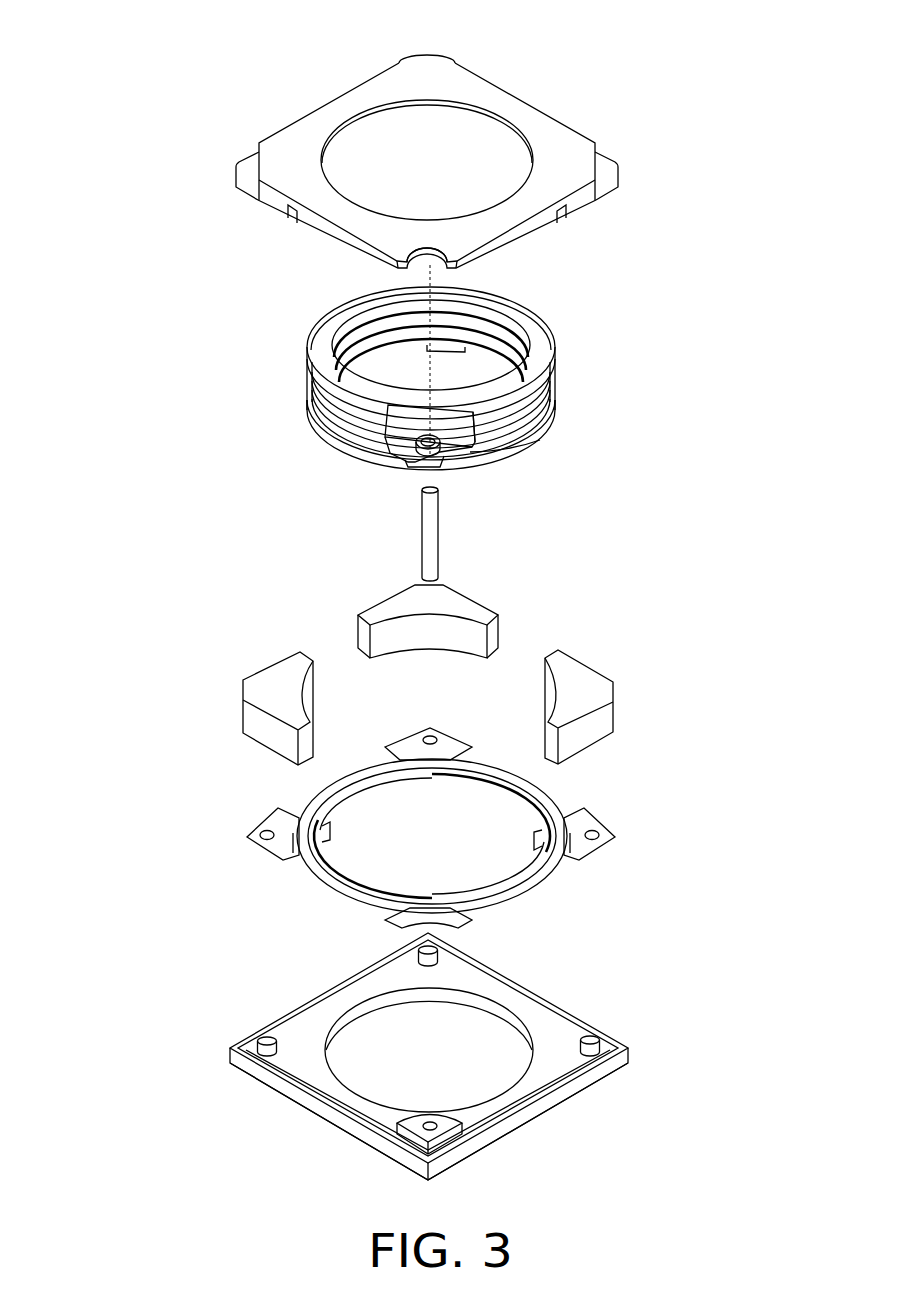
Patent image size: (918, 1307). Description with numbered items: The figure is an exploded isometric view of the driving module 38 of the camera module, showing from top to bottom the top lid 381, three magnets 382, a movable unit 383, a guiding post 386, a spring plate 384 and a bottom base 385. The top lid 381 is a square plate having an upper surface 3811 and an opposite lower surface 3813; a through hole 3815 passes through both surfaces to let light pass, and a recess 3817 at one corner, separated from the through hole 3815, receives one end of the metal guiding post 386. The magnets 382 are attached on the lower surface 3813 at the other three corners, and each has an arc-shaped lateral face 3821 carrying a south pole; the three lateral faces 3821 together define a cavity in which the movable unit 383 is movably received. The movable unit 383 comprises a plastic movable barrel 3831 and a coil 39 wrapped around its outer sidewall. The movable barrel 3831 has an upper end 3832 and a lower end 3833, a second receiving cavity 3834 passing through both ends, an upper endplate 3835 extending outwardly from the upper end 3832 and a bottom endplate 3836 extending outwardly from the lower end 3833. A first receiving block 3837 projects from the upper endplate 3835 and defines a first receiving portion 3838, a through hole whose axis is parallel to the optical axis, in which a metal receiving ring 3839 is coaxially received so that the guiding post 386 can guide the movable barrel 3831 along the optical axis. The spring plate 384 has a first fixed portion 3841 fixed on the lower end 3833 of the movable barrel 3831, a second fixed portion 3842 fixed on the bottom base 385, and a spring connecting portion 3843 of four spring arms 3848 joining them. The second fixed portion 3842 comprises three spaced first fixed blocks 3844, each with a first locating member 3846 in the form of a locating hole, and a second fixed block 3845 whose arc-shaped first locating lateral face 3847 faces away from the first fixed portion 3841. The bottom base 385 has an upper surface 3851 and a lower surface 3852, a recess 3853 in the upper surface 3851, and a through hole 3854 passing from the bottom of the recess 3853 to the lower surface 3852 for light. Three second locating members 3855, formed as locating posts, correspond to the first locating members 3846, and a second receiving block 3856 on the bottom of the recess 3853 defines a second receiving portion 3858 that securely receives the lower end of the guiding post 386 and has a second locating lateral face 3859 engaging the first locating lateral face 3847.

The driving module 38 is at (150, 44).
The top lid 381 is at (745, 62).
The upper surface 3811 is at (545, 147).
The lower surface 3813 is at (612, 203).
The through hole 3815 is at (468, 138).
The recess 3817 is at (440, 262).
The movable unit 383 is at (598, 364).
The movable barrel 3831 is at (182, 263).
The upper end 3832 is at (325, 353).
The lower end 3833 is at (325, 440).
The second receiving cavity 3834 is at (410, 372).
The upper endplate 3835 is at (328, 330).
The bottom endplate 3836 is at (325, 425).
The first receiving block 3837 is at (458, 428).
The first receiving portion 3838 is at (420, 456).
The metal receiving ring 3839 is at (440, 445).
The coil 39 is at (523, 453).
The guiding post 386 is at (430, 547).
The magnets 382 is at (583, 690).
The arc-shaped lateral face 3821 is at (467, 634).
The spring plate 384 is at (228, 768).
The first fixed portion 3841 is at (531, 805).
The second fixed portion 3842 is at (740, 838).
The spring connecting portion 3843 is at (117, 790).
The first fixed blocks 3844 is at (583, 847).
The second fixed block 3845 is at (477, 920).
The first locating member 3846 is at (424, 738).
The first locating lateral face 3847 is at (407, 923).
The spring arms 3848 is at (305, 797).
The bottom base 385 is at (230, 1005).
The upper surface 3851 is at (620, 1040).
The lower surface 3852 is at (607, 1073).
The recess 3853 is at (525, 1008).
The through hole 3854 is at (400, 1114).
The second locating members 3855 is at (262, 1038).
The second receiving block 3856 is at (447, 1137).
The second receiving portion 3858 is at (428, 1127).
The second locating lateral face 3859 is at (368, 1065).